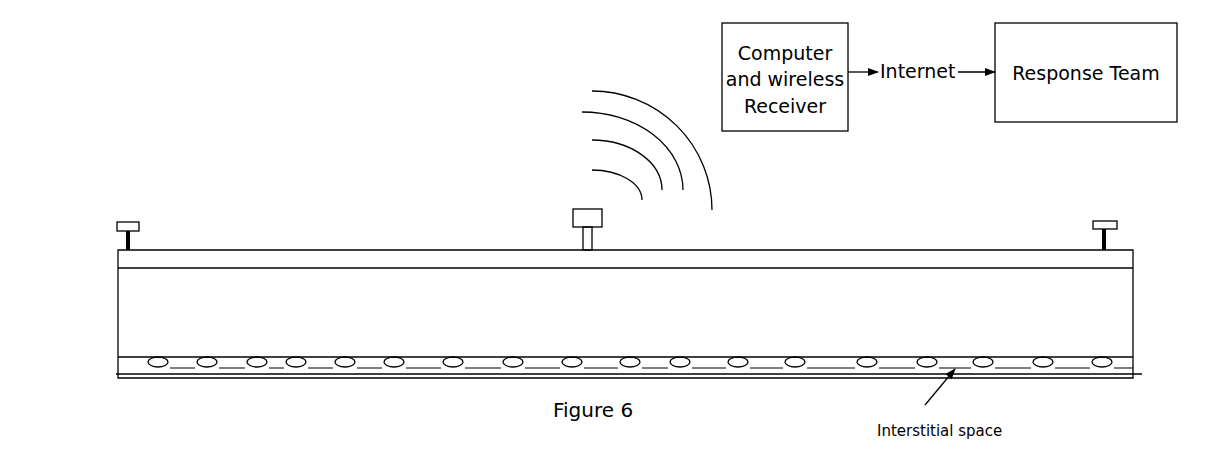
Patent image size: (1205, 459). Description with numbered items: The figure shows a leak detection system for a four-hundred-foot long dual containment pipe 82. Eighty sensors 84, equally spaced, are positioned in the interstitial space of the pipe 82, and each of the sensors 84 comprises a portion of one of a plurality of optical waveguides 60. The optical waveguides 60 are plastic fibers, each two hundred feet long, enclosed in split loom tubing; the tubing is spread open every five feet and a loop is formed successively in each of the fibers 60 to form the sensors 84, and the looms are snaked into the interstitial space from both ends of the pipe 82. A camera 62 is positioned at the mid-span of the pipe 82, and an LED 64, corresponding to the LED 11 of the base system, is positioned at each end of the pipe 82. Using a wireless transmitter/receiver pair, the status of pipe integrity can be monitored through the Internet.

The LED 11 is at (1089, 229).
The optical waveguides 60 is at (263, 367).
The camera 62 is at (604, 220).
The LED 64 is at (118, 220).
The pipe 82 is at (347, 248).
The sensors 84 is at (391, 367).